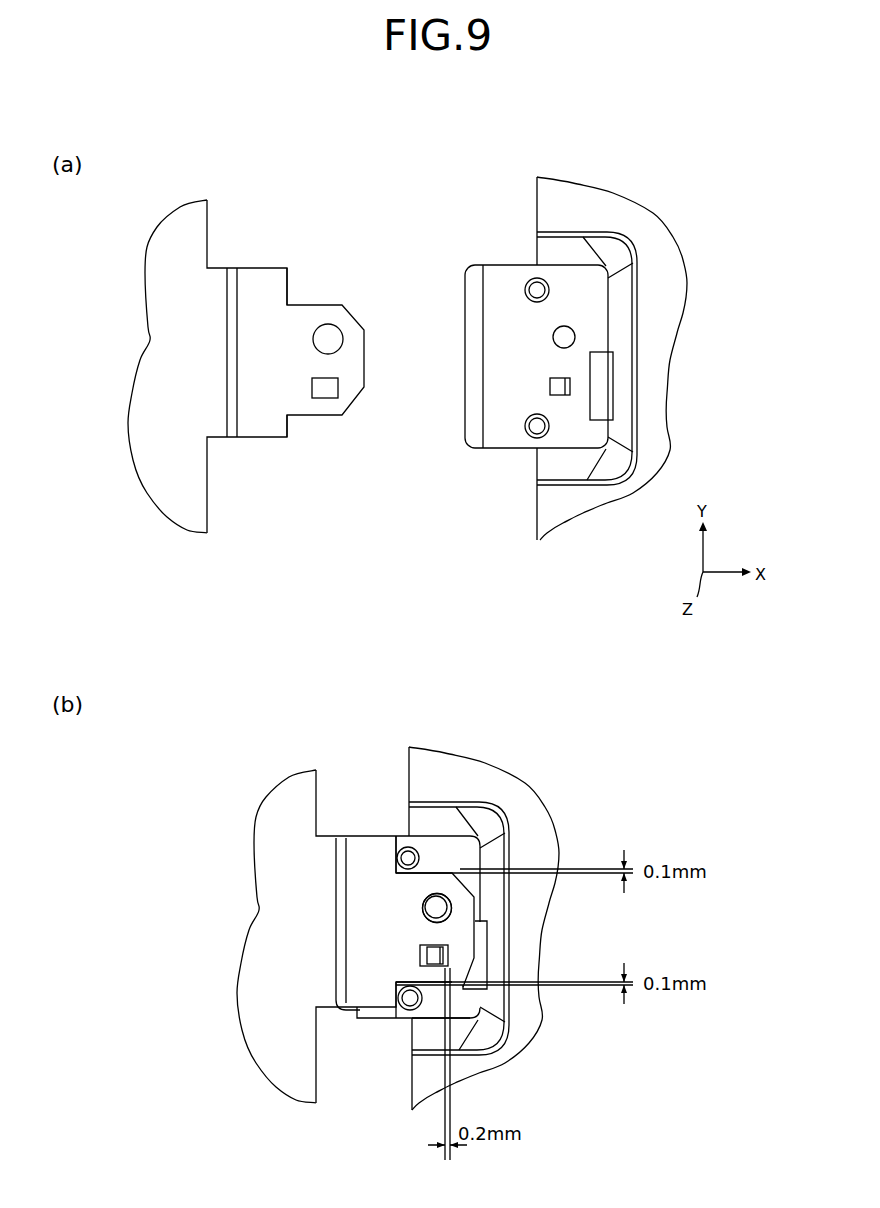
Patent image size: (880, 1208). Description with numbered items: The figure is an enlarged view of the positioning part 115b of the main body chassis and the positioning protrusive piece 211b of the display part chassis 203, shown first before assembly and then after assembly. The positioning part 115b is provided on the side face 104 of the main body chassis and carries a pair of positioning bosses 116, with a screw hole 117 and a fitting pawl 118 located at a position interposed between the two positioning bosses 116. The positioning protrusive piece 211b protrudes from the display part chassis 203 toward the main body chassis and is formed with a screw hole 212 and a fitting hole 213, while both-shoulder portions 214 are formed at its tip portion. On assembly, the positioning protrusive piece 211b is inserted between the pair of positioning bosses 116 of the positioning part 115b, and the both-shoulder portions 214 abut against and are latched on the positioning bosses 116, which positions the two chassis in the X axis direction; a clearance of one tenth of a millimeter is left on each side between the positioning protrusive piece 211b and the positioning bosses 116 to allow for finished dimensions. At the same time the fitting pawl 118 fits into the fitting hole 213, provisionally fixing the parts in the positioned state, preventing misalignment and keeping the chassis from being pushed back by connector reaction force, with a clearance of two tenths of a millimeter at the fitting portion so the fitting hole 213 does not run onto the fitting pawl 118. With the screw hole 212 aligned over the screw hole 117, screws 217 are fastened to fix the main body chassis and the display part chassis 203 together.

The side face 104 is at (672, 342).
The positioning part 115b is at (597, 307).
The positioning bosses 116 is at (537, 290).
The screw hole 117 is at (568, 328).
The fitting pawl 118 is at (560, 397).
The display part chassis 203 is at (147, 347).
The positioning protrusive piece 211b is at (262, 268).
The screw hole 212 is at (345, 339).
The fitting hole 213 is at (340, 390).
The both-shoulder portions 214 is at (287, 287).
The screws 217 is at (433, 893).